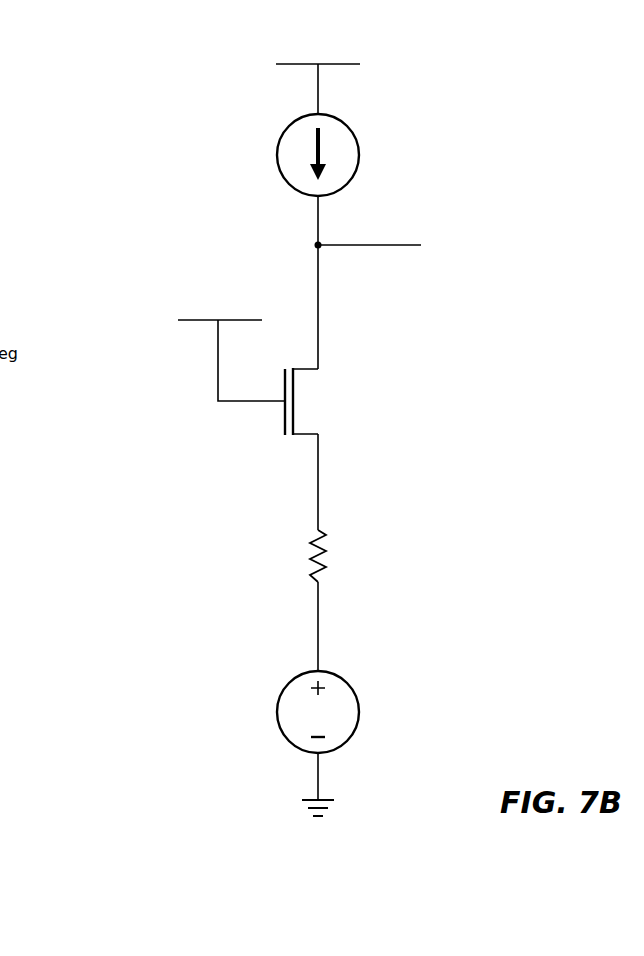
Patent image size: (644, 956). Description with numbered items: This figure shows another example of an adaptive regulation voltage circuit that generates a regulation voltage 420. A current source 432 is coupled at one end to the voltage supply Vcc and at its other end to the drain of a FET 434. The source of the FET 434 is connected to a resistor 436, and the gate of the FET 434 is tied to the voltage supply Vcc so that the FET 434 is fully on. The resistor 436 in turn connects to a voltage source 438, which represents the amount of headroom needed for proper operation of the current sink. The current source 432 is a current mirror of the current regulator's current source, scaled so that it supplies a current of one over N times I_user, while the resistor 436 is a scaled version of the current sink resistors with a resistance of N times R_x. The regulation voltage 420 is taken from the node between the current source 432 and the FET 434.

The current source 432 is at (285, 127).
The regulation voltage 420 is at (383, 248).
The FET 434 is at (318, 400).
The resistor 436 is at (312, 552).
The voltage source 438 is at (287, 684).